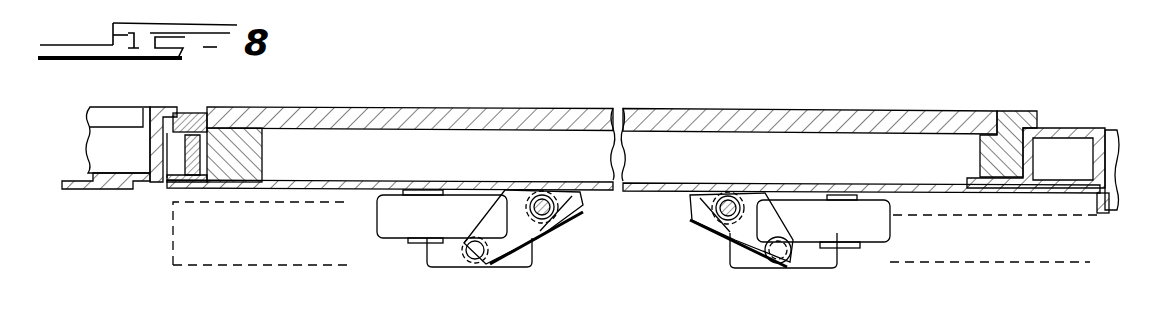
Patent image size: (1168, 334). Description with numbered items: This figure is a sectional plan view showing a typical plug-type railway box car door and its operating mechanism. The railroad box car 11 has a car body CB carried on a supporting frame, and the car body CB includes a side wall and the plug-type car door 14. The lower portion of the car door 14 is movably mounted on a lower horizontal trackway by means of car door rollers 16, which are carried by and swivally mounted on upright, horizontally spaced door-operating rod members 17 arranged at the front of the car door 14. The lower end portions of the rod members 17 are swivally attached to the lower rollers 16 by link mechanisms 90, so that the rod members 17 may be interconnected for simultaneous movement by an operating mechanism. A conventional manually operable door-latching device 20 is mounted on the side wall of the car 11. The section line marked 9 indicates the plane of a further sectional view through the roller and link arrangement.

The railroad box car 11 is at (1075, 130).
The car door 14 is at (173, 233).
The car door rollers 16 is at (377, 231).
The door-operating rod members 17 is at (546, 196).
The door-latching device 20 is at (770, 272).
The link mechanisms 90 is at (545, 244).
The car body CB is at (100, 143).
The section line 9- 9 is at (406, 78).